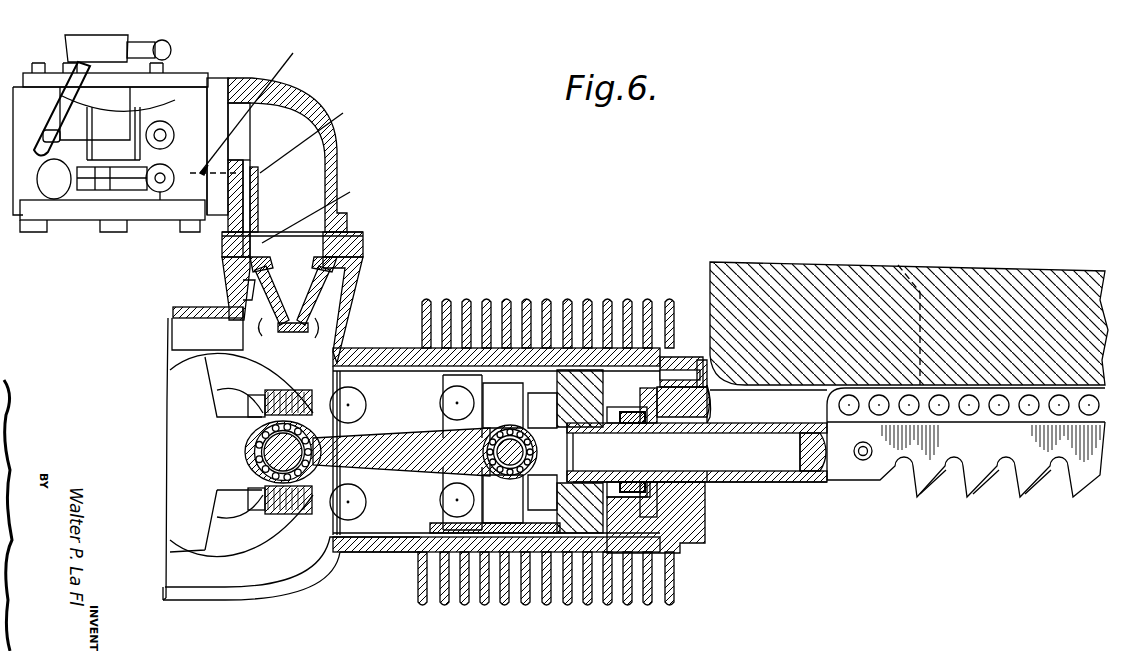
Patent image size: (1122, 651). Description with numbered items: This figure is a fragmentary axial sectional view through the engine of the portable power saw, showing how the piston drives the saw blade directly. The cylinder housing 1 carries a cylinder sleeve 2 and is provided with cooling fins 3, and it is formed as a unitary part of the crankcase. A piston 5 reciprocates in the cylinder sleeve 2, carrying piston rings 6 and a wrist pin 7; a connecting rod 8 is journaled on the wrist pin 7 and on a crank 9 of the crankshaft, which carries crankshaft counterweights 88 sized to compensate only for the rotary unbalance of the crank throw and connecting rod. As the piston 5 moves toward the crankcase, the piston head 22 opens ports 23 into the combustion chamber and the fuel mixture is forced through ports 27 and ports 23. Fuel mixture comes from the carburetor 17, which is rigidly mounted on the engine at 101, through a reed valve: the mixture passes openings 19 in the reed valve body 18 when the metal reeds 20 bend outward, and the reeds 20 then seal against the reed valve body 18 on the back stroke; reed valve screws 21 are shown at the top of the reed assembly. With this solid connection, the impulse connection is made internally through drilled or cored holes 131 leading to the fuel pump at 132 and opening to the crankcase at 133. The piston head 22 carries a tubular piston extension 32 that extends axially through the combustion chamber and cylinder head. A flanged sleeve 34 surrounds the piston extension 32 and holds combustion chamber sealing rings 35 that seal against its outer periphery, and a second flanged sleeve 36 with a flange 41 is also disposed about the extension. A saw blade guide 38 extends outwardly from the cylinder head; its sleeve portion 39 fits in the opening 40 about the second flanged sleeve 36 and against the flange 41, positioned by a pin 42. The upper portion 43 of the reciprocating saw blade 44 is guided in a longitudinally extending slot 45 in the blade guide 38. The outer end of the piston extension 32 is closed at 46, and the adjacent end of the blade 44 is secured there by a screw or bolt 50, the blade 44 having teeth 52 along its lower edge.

The carburetor 17 is at (130, 92).
The fuel pump 132 is at (228, 168).
The drilled or cored holes 131 is at (248, 205).
The carburetor mounting 101 is at (348, 233).
The crankcase opening 133 is at (222, 246).
The reed valve body 18 is at (281, 310).
The reed valve screws 21 is at (317, 263).
The openings 19 is at (258, 322).
The metal reeds 20 is at (310, 325).
The crankshaft counterweights 88 is at (198, 525).
The crank 9 is at (242, 447).
The cylinder housing 1 is at (385, 351).
The cooling fins 3 is at (583, 298).
The ports 27 is at (351, 405).
The cylinder sleeve 2 is at (370, 452).
The ports 23 is at (446, 451).
The piston rings 6 is at (522, 386).
The wrist pin 7 is at (508, 481).
The piston 5 is at (443, 520).
The connecting rod 8 is at (407, 444).
The piston head 22 is at (586, 423).
The piston extension 32 is at (737, 482).
The longitudinally extending slot 45 is at (773, 423).
The closed outer end 46 is at (804, 482).
The flanged sleeve 34 is at (623, 422).
The combustion chamber sealing rings 35 is at (644, 482).
The flange 41 is at (678, 483).
The second flanged sleeve 36 is at (688, 421).
The opening 40 is at (670, 355).
The pin 42 is at (700, 361).
The sleeve portion 39 is at (722, 393).
The saw blade guide 38 is at (855, 272).
The upper portion of saw blade 43 is at (843, 404).
The reciprocating saw blade 44 is at (918, 458).
The teeth 52 is at (1017, 483).
The screw or bolt 50 is at (862, 460).